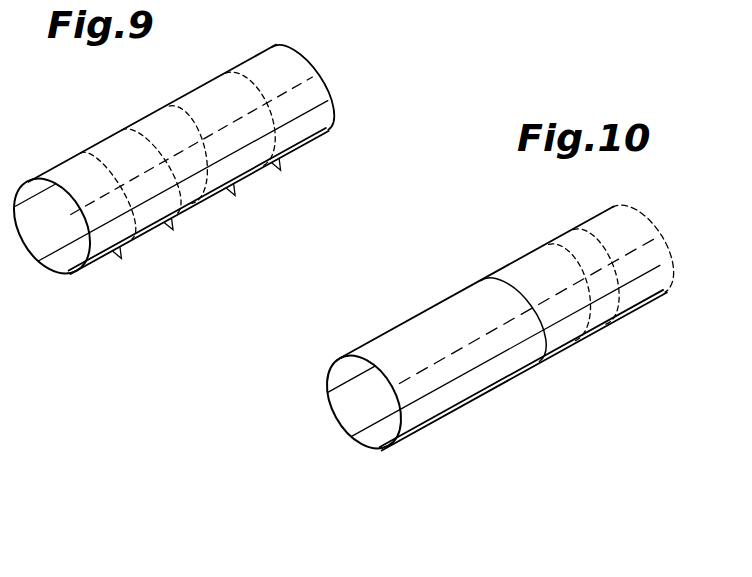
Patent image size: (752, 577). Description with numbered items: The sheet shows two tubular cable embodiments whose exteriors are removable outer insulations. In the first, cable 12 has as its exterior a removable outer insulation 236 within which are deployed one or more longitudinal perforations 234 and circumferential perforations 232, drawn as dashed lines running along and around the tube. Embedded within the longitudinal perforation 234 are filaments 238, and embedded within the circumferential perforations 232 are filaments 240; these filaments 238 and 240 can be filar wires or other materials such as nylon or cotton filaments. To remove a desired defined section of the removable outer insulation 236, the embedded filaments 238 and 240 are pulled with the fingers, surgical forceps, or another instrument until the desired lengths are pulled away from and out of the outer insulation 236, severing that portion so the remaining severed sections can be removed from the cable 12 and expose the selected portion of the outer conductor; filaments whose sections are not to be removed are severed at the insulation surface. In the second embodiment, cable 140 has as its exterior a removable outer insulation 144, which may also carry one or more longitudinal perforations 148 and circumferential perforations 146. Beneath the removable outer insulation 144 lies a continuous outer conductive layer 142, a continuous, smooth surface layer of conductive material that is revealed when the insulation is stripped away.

In FIG. 9, the cable 12 is at (215, 60).
In FIG. 9, the circumferential perforations 232 is at (262, 143).
In FIG. 9, the longitudinal perforations 234 is at (332, 117).
In FIG. 9, the removable outer insulation 236 is at (308, 97).
In FIG. 9, the filaments 238 is at (313, 45).
In FIG. 9, the filaments 240 is at (283, 153).
In FIG. 10, the cable 140 is at (455, 435).
In FIG. 10, the continuous outer conductive layer 142 is at (467, 372).
In FIG. 10, the removable outer insulation 144 is at (570, 338).
In FIG. 10, the circumferential perforations 146 is at (622, 323).
In FIG. 10, the longitudinal perforations 148 is at (548, 240).